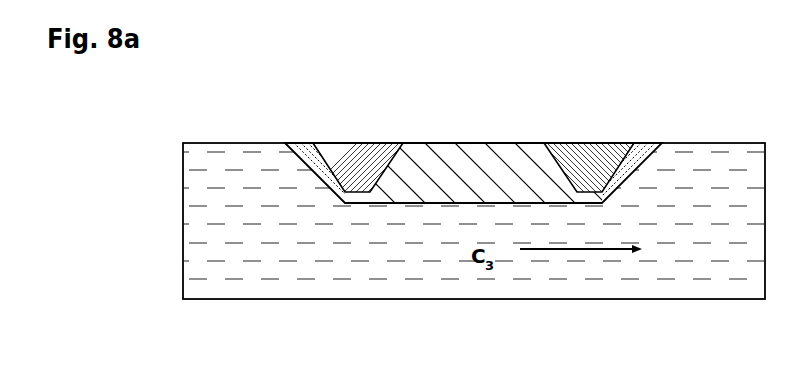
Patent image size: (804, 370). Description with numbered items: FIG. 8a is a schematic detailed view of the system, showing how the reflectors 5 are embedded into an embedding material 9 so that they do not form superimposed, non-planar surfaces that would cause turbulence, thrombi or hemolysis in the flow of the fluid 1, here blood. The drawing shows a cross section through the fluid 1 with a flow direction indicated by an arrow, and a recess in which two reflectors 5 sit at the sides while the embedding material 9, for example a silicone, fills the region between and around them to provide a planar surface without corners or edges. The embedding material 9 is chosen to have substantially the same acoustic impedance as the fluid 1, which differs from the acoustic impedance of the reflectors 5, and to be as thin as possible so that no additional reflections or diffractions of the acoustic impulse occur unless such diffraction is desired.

The fluid 1 is at (712, 268).
The reflector 5 is at (362, 160).
The embedding material 9 is at (472, 160).